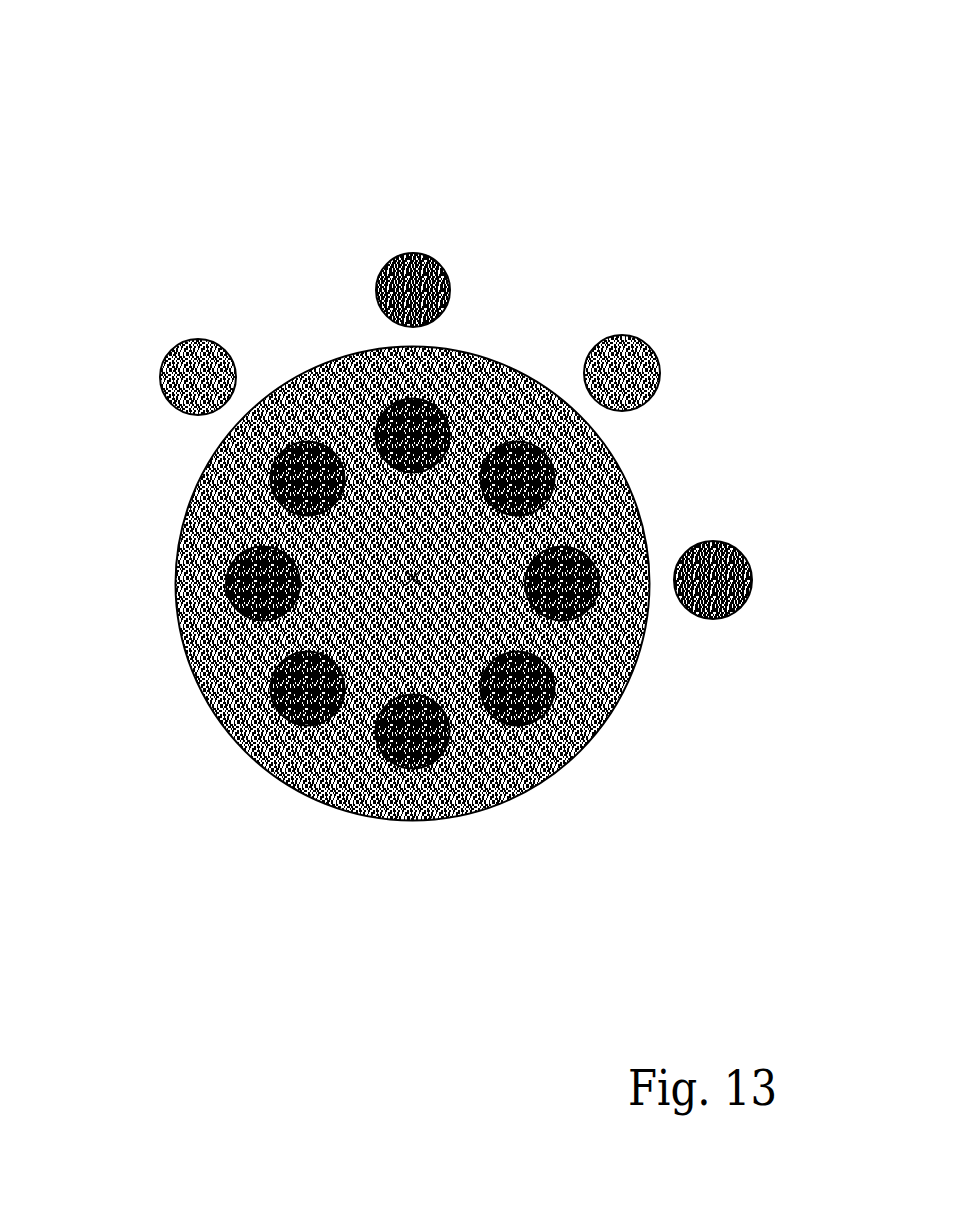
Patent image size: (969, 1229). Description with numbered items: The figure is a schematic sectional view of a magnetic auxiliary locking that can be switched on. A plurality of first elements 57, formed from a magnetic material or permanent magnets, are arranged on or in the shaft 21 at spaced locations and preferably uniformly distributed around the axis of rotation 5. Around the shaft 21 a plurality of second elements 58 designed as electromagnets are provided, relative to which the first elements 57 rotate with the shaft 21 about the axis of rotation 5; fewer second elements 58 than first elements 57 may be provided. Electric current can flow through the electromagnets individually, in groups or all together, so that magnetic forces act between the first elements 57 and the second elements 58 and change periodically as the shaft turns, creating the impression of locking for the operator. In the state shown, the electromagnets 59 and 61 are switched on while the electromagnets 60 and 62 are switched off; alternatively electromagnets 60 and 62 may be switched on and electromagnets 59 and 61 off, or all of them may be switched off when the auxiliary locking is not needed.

The shaft 21 is at (485, 773).
The first elements 57 is at (392, 745).
The axis of rotation 5 is at (398, 573).
The second elements 58 is at (607, 370).
The electromagnet 59 is at (752, 565).
The electromagnet 60 is at (645, 346).
The electromagnet 61 is at (376, 290).
The electromagnet 62 is at (161, 375).